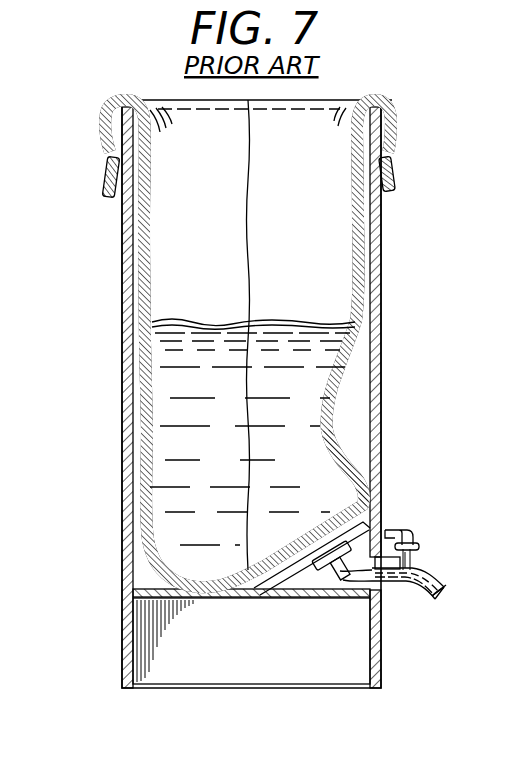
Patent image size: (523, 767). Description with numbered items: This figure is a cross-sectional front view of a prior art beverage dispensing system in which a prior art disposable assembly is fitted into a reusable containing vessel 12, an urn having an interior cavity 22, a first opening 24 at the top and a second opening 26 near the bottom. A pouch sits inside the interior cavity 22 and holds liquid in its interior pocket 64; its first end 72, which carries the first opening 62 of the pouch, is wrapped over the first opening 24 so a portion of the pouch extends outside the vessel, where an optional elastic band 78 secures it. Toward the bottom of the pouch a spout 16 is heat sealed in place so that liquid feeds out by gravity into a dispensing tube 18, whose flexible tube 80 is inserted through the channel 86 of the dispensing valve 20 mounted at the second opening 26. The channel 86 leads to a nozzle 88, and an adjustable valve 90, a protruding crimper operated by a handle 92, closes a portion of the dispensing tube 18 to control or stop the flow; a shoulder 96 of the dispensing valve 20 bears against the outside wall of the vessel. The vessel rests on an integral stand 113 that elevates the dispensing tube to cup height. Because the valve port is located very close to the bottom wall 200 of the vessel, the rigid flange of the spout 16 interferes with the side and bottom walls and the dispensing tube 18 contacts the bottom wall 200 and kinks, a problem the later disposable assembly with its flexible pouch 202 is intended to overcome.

The containing vessel 12 is at (122, 545).
The spout 16 is at (228, 590).
The dispensing tube 18 is at (333, 578).
The dispensing valve 20 is at (426, 568).
The interior cavity 22 is at (118, 414).
The first opening 24 is at (362, 84).
The second opening 26 is at (386, 473).
The first opening of the pouch 62 is at (174, 126).
The interior pocket 64 is at (300, 256).
The first end of the pouch 72 is at (393, 182).
The elastic band 78 is at (107, 165).
The tube 80 is at (436, 596).
The channel 86 is at (435, 576).
The nozzle 88 is at (446, 579).
The adjustable valve 90 is at (418, 562).
The handle 92 is at (395, 528).
The shoulder 96 is at (387, 592).
The integral stand 113 is at (122, 622).
The bottom wall 200 is at (250, 590).
The flexible pouch 202 is at (365, 432).